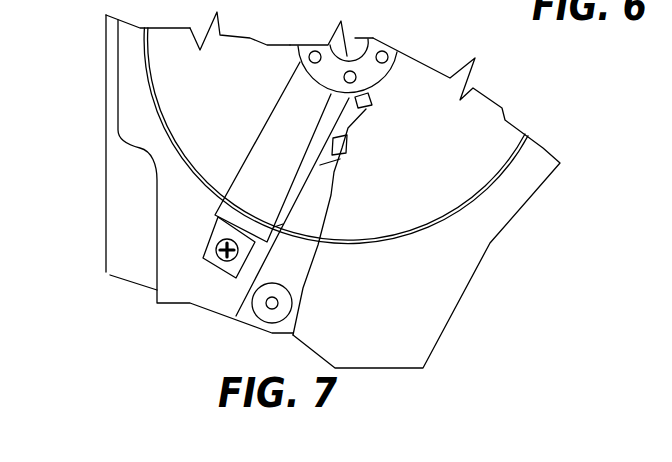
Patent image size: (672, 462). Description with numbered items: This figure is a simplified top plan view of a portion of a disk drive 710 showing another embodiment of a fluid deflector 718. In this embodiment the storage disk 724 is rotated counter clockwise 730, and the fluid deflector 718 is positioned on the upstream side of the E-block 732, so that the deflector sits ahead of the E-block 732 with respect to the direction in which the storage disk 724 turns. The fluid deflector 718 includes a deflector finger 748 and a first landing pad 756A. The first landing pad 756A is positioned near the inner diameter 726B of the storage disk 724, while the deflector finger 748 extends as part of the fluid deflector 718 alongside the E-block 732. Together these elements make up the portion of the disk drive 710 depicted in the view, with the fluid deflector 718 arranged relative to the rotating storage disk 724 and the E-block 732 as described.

The disk drive 710 is at (537, 108).
The storage disk 724 is at (185, 87).
The fluid deflector 718 is at (258, 161).
The deflector finger 748 is at (253, 190).
The counter clockwise rotation 730 is at (232, 84).
The inner diameter 726B is at (290, 57).
The first landing pad 756A is at (362, 98).
The E-block 732 is at (336, 206).